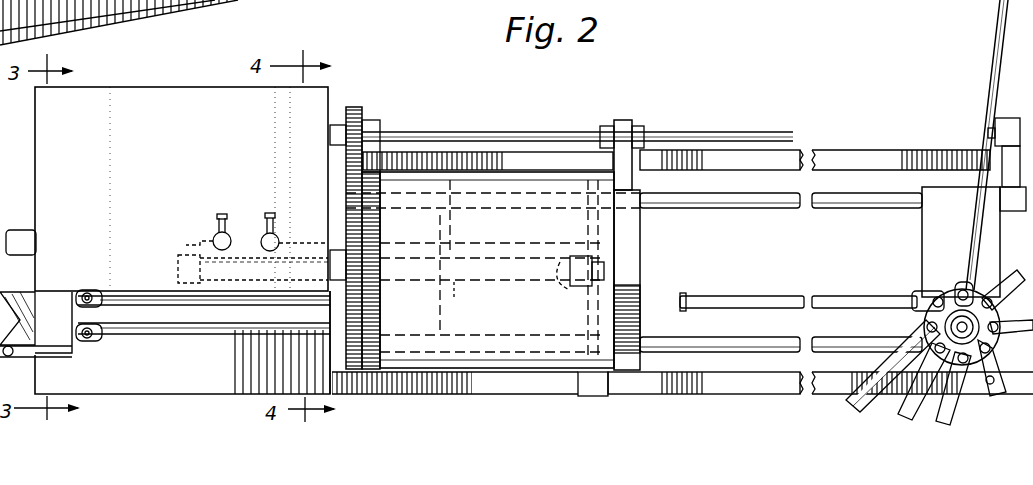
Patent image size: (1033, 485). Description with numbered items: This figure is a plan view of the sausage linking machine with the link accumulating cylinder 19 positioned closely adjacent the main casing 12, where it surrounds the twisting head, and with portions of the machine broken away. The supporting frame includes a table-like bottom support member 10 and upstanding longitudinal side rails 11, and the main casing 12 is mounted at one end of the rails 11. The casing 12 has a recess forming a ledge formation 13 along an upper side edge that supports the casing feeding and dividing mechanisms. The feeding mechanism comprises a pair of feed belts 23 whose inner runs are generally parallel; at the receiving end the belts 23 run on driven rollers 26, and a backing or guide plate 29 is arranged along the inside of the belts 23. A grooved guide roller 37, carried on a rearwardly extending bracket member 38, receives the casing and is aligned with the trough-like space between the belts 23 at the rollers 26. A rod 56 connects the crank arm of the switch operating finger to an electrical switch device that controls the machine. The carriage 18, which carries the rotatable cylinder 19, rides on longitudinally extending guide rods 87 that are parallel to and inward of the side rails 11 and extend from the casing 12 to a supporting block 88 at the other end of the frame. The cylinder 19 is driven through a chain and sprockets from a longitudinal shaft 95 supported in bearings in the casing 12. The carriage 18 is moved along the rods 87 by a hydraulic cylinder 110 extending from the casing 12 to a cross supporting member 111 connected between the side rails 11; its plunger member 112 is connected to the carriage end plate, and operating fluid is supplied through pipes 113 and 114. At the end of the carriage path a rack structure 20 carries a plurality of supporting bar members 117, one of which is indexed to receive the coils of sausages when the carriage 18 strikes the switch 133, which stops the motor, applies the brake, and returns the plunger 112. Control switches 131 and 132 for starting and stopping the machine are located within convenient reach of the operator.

The bottom support member 10 is at (238, 2).
The side rails 11 is at (862, 154).
The main casing 12 is at (153, 98).
The ledge formation 13 is at (222, 393).
The carriage 18 is at (540, 172).
The link accumulating cylinder 19 is at (626, 242).
The rack structure 20 is at (943, 300).
The feed belts 23 is at (150, 305).
The driven rollers 26 is at (92, 298).
The guide plate 29 is at (213, 305).
The guide roller 37 is at (36, 322).
The bracket member 38 is at (27, 356).
The rod 56 is at (317, 296).
The guide rods 87 is at (722, 208).
The supporting block 88 is at (940, 188).
The shaft 95 is at (708, 134).
The hydraulic cylinder 110 is at (470, 301).
The cross supporting member 111 is at (630, 303).
The plunger member 112 is at (622, 280).
The pipe 113 is at (275, 222).
The pipe 114 is at (216, 226).
The supporting bar members 117 is at (998, 20).
The control switch 131 is at (24, 238).
The control switch 132 is at (598, 396).
The switch 133 is at (1003, 126).